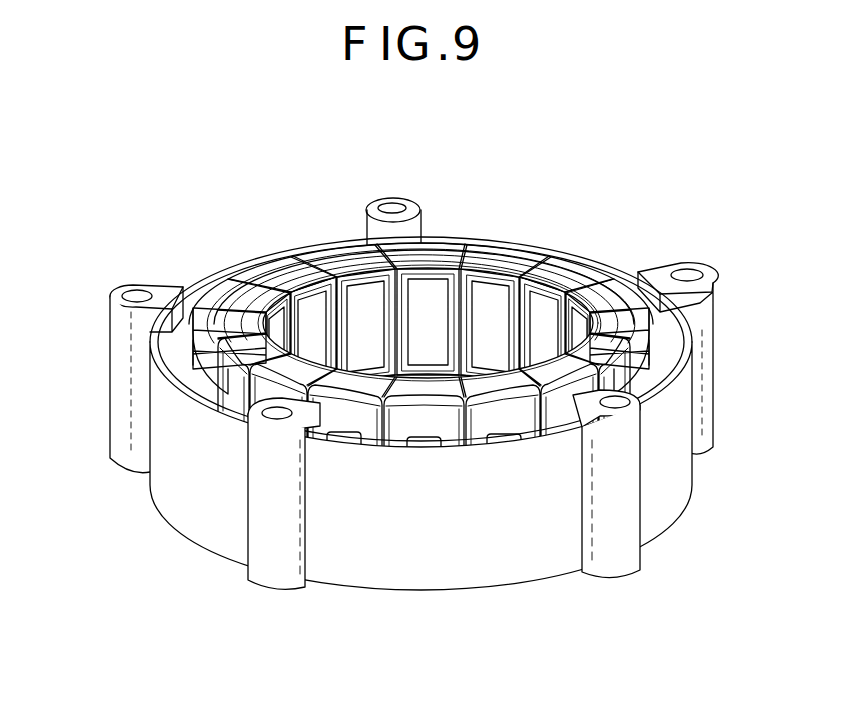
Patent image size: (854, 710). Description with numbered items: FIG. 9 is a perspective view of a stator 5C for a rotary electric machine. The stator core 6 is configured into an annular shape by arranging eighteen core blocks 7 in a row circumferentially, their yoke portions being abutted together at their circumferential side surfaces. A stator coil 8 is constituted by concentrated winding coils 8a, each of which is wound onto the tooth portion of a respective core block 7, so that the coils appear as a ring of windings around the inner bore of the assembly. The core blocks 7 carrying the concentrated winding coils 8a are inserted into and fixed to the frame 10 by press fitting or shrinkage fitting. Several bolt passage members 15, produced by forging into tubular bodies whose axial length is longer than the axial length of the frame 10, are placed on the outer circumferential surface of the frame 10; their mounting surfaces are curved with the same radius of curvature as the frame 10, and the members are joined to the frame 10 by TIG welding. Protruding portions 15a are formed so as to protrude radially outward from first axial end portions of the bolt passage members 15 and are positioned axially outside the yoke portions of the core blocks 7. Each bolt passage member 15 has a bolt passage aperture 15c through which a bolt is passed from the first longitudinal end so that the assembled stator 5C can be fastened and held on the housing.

The stator 5C is at (158, 127).
The stator core 6 is at (671, 350).
The core block 7 is at (176, 365).
The stator coil 8 is at (524, 239).
The concentrated winding coil 8a is at (282, 256).
The frame 10 is at (176, 497).
The bolt passage member 15 is at (419, 193).
The protruding portion 15a is at (371, 226).
The bolt passage aperture 15c is at (386, 205).